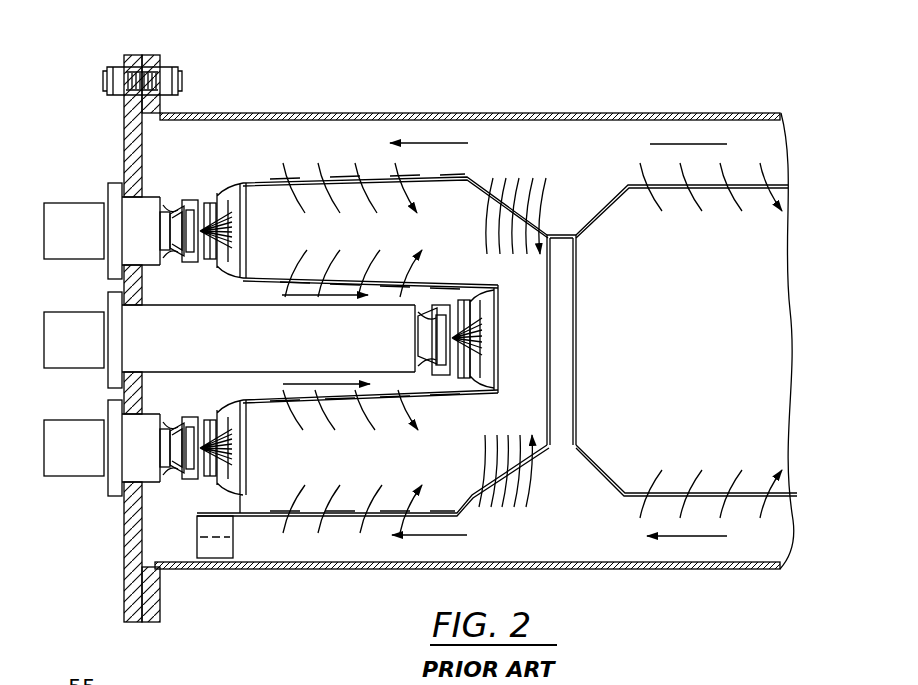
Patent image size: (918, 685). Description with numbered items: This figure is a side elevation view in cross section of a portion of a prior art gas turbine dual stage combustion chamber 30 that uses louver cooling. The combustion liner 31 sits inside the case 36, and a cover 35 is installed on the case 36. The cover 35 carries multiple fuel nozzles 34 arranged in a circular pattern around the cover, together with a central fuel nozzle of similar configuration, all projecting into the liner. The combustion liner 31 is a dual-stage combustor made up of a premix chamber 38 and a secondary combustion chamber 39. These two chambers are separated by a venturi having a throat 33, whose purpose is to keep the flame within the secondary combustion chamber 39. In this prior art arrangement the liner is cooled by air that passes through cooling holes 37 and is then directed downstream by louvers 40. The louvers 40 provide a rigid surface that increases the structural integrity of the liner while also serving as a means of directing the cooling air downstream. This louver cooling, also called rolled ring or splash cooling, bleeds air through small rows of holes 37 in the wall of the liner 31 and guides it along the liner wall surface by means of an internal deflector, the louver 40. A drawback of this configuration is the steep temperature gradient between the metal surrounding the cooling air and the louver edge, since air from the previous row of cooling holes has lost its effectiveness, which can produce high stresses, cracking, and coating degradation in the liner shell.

The dual stage combustion chamber 30 is at (476, 299).
The combustion liner 31 is at (262, 172).
The throat 33 is at (573, 343).
The fuel nozzles 34 is at (90, 253).
The cover 35 is at (124, 60).
The case 36 is at (415, 111).
The cooling holes 37 is at (414, 398).
The premix chamber 38 is at (417, 244).
The secondary combustion chamber 39 is at (697, 295).
The louvers 40 is at (415, 512).